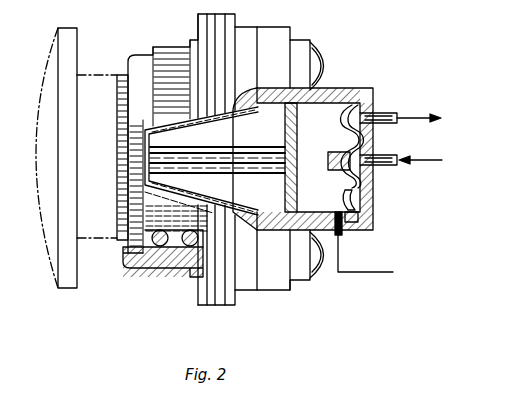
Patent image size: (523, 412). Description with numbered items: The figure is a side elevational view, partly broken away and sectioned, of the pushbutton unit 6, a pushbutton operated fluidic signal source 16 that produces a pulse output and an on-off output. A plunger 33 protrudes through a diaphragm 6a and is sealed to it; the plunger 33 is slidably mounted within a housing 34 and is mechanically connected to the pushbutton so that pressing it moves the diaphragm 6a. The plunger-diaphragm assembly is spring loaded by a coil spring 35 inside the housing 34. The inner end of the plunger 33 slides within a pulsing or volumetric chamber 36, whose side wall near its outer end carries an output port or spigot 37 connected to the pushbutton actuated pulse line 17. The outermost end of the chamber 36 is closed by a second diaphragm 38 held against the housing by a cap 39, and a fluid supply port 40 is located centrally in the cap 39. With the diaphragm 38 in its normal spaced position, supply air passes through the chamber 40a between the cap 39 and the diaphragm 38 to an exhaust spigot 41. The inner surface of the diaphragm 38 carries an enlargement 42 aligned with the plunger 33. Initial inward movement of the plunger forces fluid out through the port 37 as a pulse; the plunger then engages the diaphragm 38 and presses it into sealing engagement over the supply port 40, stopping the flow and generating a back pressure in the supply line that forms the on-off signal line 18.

The pushbutton unit 6 is at (185, 281).
The diaphragm 6a is at (233, 118).
The fluidic signal source 16 is at (305, 250).
The pushbutton actuated pulse line 17 is at (376, 274).
The on-off signal line 18 is at (437, 165).
The plunger 33 is at (299, 175).
The housing 34 is at (278, 282).
The coil spring 35 is at (157, 242).
The pulsing or volumetric chamber 36 is at (332, 139).
The output port or spigot 37 is at (345, 233).
The diaphragm 38 is at (372, 192).
The cap 39 is at (360, 218).
The fluid supply port 40 is at (385, 154).
The chamber 40a is at (357, 205).
The output or exhaust spigot 41 is at (388, 112).
The enlargement 42 is at (340, 156).